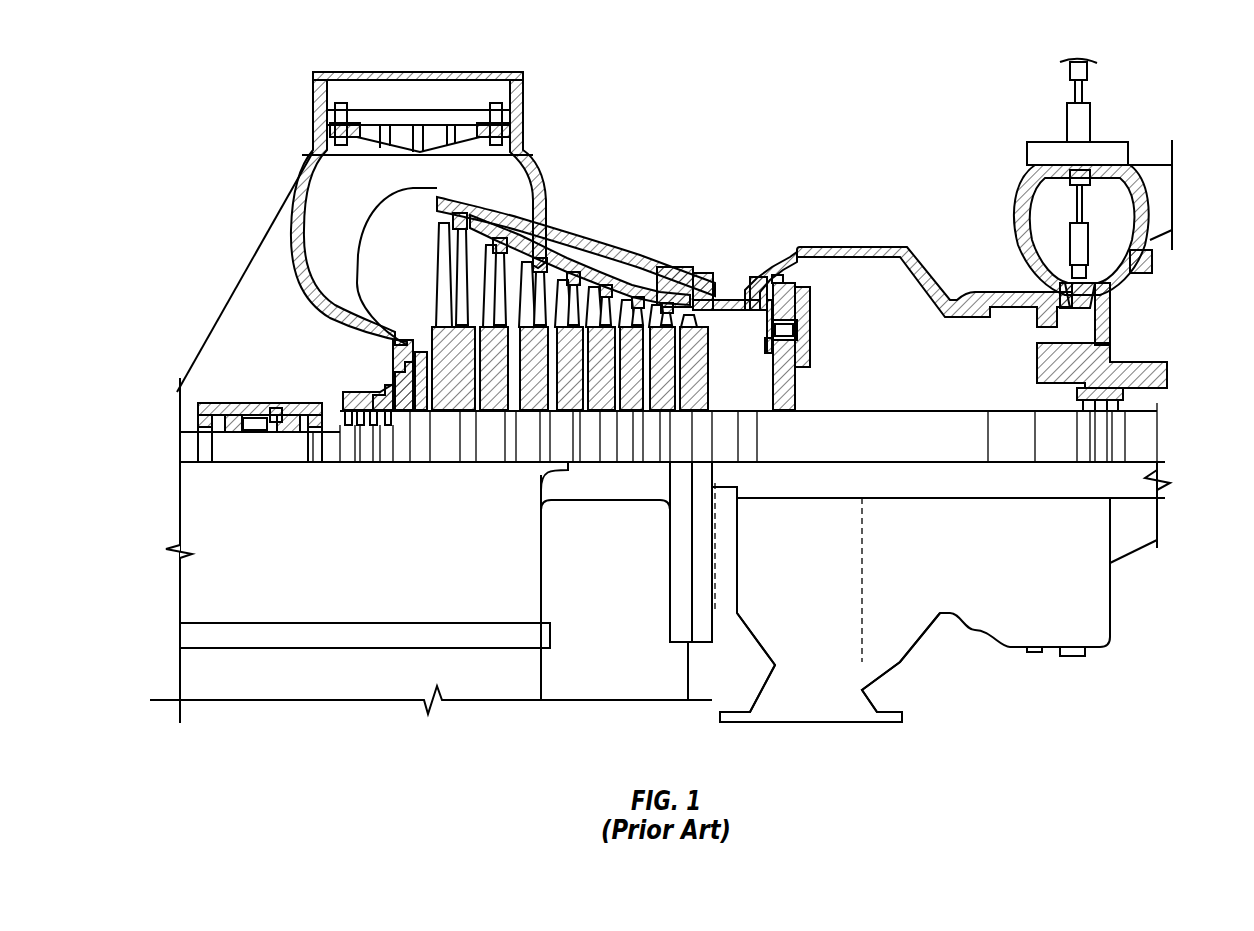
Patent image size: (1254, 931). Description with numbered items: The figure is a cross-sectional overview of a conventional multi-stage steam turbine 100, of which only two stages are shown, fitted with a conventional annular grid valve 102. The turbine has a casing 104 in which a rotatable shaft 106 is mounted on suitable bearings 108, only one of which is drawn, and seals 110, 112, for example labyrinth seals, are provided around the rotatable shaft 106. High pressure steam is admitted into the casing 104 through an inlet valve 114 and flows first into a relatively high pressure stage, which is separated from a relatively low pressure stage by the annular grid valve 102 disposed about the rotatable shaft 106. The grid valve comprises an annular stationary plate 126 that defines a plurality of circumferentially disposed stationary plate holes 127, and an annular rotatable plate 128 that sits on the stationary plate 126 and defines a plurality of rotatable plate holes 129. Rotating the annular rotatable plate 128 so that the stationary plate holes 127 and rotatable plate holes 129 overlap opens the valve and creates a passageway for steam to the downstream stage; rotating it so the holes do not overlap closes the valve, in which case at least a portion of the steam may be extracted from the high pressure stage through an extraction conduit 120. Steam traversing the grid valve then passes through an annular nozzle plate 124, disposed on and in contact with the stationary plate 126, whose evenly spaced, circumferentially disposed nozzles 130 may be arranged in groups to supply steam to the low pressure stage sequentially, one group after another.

The multi-stage steam turbine 100 is at (949, 210).
The annular grid valve 102 is at (814, 292).
The casing 104 is at (877, 245).
The rotatable shaft 106 is at (915, 432).
The bearings 108 is at (235, 420).
The seal 110 is at (345, 395).
The seal 112 is at (1105, 395).
The inlet valve 114 is at (1068, 242).
The extraction conduit 120 is at (855, 668).
The annular nozzle plate 124 is at (768, 352).
The annular stationary plate 126 is at (780, 272).
The stationary plate holes 127 is at (790, 333).
The annular rotatable plate 128 is at (803, 283).
The rotatable plate holes 129 is at (803, 327).
The nozzles 130 is at (765, 325).